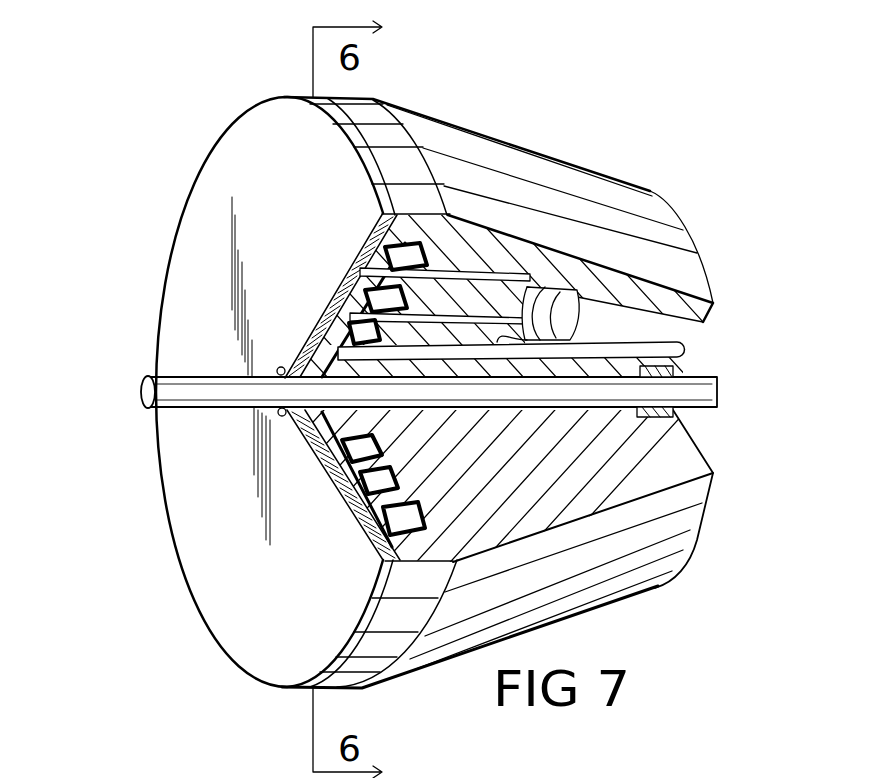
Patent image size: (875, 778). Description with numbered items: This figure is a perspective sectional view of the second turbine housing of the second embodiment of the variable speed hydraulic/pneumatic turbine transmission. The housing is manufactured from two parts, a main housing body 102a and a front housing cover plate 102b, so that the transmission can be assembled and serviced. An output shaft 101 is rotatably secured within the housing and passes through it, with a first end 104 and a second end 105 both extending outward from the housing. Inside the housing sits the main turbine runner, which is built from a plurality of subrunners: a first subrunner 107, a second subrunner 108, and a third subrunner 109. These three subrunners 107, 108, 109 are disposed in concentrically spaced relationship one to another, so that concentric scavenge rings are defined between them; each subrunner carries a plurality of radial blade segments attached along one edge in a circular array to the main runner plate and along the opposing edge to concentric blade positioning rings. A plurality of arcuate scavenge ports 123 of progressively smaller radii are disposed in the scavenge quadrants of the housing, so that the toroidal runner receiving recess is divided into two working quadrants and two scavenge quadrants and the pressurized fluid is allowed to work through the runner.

The output shaft 101 is at (172, 377).
The main housing body 102a is at (633, 197).
The front housing cover plate 102b is at (197, 207).
The first end 104 is at (141, 402).
The second end 105 is at (717, 377).
The first subrunner 107 is at (370, 537).
The second subrunner 108 is at (345, 490).
The third subrunner 109 is at (318, 443).
The arcuate scavenge ports 123 is at (580, 311).